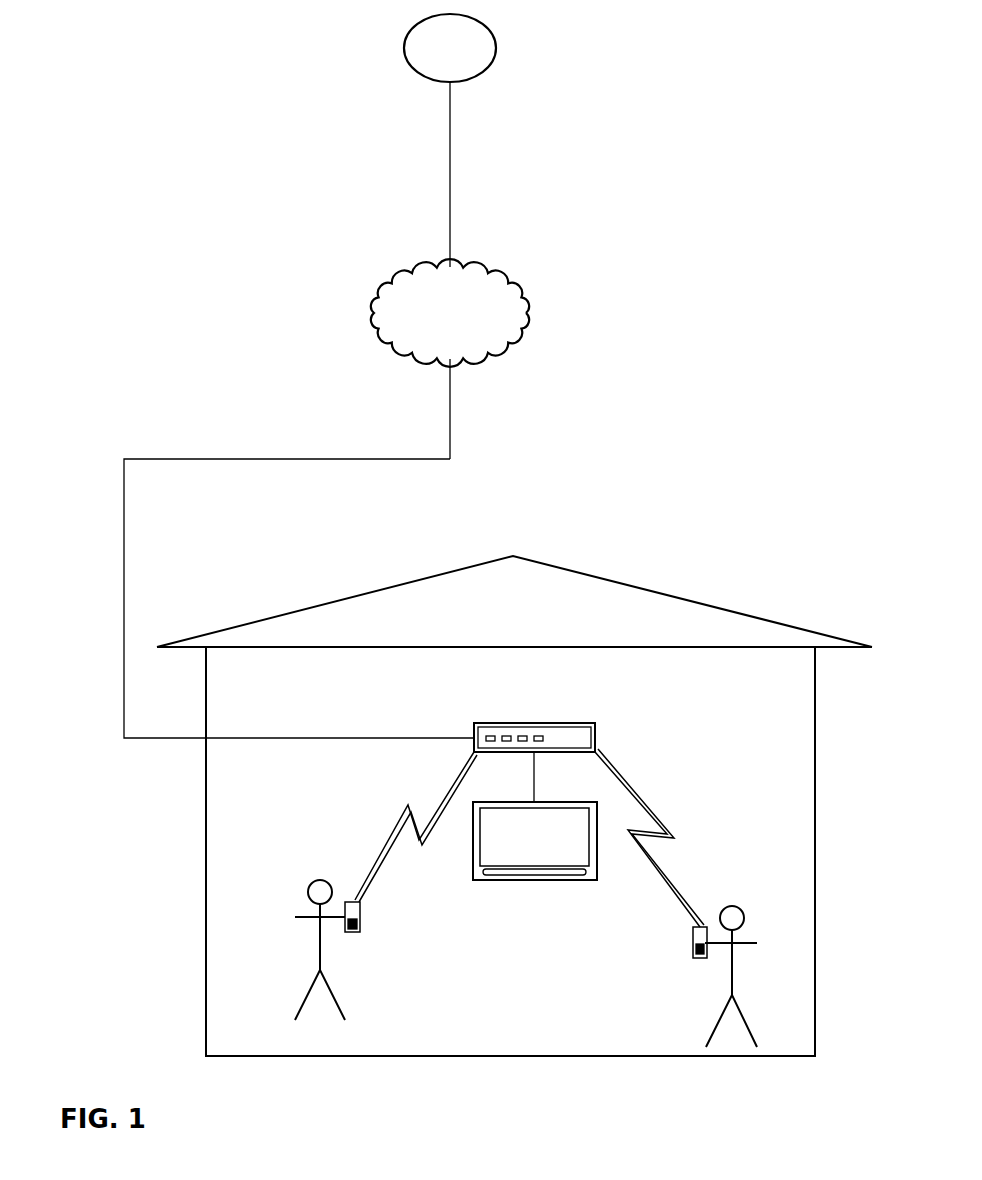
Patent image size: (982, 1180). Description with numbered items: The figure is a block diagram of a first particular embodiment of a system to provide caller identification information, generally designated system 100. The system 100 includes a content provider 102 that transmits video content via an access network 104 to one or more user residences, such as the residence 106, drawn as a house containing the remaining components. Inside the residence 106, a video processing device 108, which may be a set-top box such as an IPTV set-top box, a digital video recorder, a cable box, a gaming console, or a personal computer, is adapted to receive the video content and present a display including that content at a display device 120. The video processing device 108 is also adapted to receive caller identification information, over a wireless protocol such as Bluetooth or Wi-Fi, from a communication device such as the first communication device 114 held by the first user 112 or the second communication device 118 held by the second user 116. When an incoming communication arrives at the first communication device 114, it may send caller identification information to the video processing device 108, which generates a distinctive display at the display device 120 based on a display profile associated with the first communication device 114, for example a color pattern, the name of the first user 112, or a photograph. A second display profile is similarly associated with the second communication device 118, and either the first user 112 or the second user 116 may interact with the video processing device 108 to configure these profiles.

The system 100 is at (748, 114).
The content provider 102 is at (406, 44).
The access network 104 is at (374, 313).
The residence 106 is at (206, 850).
The video processing device 108 is at (517, 723).
The first user 112 is at (320, 880).
The first communication device 114 is at (354, 932).
The second user 116 is at (733, 906).
The second communication device 118 is at (698, 958).
The display device 120 is at (548, 882).